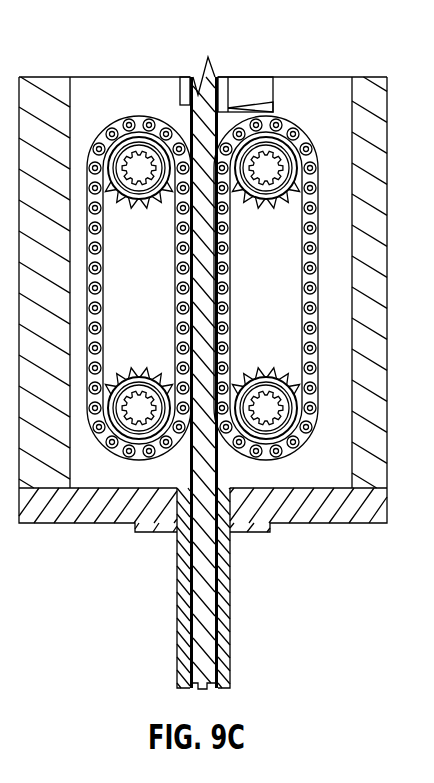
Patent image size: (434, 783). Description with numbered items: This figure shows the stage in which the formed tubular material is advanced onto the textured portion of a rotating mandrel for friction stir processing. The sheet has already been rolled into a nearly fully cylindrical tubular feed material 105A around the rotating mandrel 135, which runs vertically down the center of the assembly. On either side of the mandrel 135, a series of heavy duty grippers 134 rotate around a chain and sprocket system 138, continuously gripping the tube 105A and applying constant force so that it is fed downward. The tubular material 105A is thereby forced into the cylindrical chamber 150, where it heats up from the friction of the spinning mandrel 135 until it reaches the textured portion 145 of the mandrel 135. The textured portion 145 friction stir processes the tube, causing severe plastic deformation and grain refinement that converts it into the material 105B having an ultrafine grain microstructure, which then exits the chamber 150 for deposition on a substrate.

The grippers 134 is at (137, 118).
The chain and sprocket system 138 is at (298, 466).
The rotating mandrel 135 is at (197, 563).
The textured portion 145 is at (180, 655).
The cylindrical chamber 150 is at (238, 606).
The tubular feed material 105A is at (187, 595).
The material having the UFG microstructure 105B is at (180, 678).